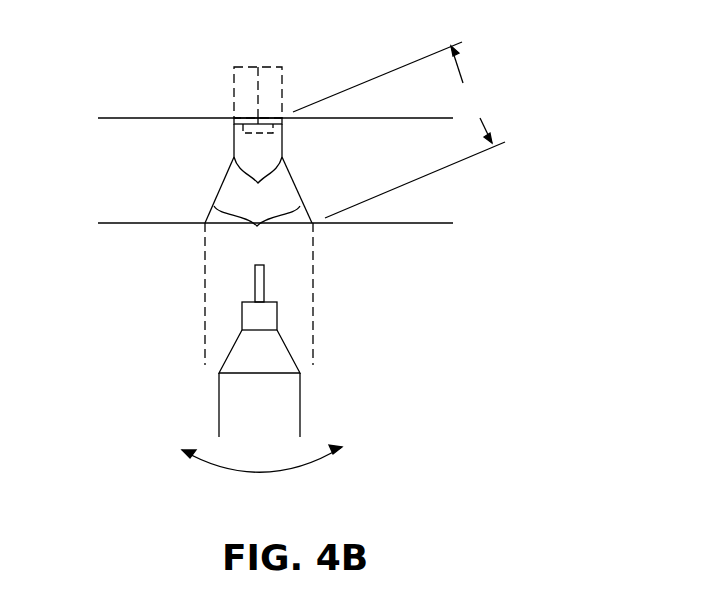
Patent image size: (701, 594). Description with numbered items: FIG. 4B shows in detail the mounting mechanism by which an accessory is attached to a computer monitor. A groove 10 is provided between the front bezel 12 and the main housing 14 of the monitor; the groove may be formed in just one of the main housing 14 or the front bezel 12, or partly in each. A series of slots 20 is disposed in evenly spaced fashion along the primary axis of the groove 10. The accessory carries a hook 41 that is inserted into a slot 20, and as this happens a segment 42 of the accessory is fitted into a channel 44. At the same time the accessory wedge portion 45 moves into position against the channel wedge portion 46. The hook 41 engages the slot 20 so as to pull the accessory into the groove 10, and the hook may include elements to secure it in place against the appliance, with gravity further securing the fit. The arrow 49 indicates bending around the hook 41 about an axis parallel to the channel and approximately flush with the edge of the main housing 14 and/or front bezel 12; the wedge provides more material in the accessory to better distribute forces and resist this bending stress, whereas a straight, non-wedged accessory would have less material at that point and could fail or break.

The groove 10 is at (399, 130).
The front bezel 12 is at (368, 223).
The main housing 14 is at (136, 118).
The slot 20 is at (264, 118).
The hook 41 is at (265, 292).
The segment 42 is at (277, 320).
The channel 44 is at (257, 175).
The accessory wedge portion 45 is at (295, 355).
The channel wedge portion 46 is at (315, 212).
The arrow 49 is at (300, 468).